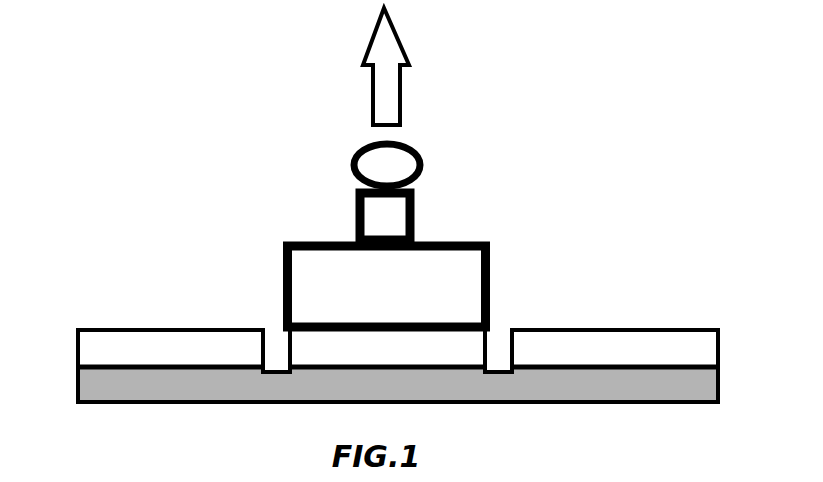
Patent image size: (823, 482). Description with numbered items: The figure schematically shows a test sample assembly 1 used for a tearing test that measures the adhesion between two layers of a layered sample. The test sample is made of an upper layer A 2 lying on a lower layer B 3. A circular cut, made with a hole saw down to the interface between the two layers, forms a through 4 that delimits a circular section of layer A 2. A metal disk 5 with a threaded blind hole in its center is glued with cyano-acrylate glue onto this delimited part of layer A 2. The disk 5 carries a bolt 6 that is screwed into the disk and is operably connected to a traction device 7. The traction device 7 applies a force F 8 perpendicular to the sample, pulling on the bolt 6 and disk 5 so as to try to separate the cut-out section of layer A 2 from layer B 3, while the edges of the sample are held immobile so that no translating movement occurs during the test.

The test sample assembly 1 is at (654, 316).
The layer A 2 is at (692, 345).
The layer B 3 is at (88, 382).
The through 4 is at (497, 360).
The disk 5 is at (460, 260).
The bolt 6 is at (372, 220).
The traction device 7 is at (372, 166).
The force F 8 is at (372, 75).